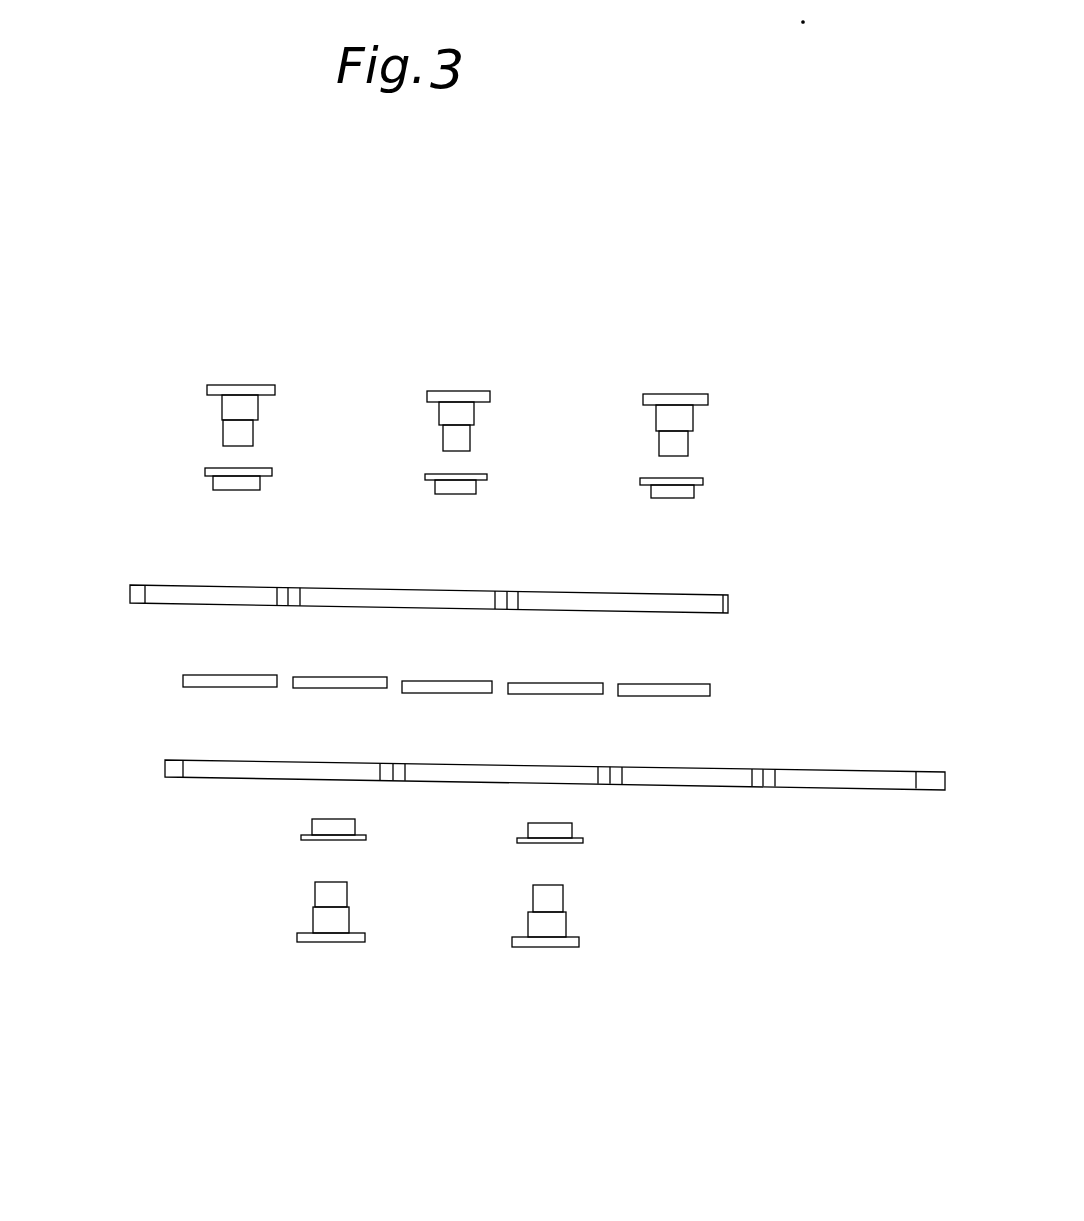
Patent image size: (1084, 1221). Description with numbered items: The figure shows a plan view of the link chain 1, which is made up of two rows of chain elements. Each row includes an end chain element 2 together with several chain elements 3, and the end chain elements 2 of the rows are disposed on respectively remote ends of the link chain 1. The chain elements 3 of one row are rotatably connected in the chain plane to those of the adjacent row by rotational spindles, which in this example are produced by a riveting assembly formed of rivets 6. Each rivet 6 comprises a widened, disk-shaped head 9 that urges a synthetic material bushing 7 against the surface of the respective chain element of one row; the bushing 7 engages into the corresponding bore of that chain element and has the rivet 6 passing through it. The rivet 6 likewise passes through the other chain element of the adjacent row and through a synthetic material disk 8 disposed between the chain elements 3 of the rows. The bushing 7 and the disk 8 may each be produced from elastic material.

The link chain 1 is at (612, 320).
The end chain element 2 is at (870, 783).
The chain element 3 is at (420, 590).
The rivet 6 is at (245, 410).
The synthetic material bushing 7 is at (262, 485).
The synthetic material disk 8 is at (228, 676).
The disk-shaped head 9 is at (240, 385).